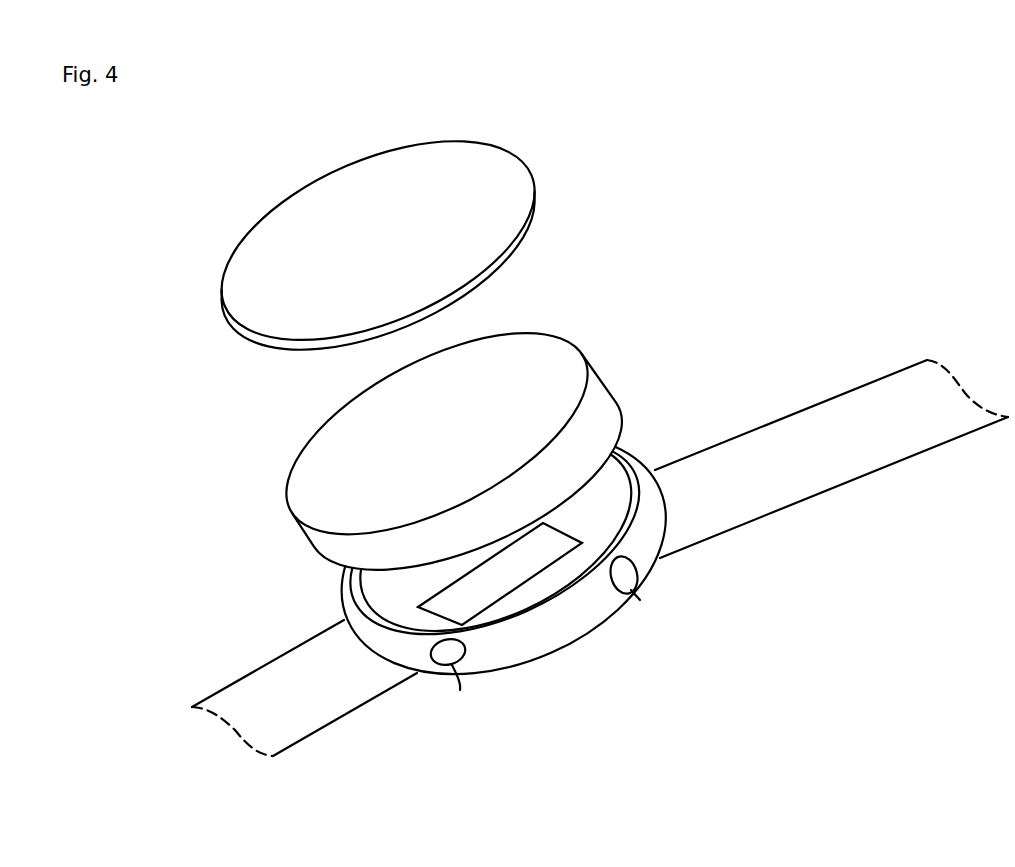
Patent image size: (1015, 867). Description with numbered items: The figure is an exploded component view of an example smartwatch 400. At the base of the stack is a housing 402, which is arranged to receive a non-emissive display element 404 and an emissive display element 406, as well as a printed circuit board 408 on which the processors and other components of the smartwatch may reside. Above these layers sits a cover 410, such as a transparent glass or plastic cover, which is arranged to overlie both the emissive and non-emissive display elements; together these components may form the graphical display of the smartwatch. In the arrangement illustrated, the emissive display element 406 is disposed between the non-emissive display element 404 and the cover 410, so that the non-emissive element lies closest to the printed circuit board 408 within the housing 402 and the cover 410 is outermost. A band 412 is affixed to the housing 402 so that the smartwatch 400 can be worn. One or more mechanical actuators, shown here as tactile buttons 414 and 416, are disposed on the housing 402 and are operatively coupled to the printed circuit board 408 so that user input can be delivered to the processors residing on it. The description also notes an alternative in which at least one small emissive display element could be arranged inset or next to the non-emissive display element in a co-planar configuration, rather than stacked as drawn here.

The smartwatch 400 is at (110, 124).
The housing 402 is at (580, 615).
The non-emissive display element 404 is at (317, 562).
The emissive display element 406 is at (287, 517).
The printed circuit board 408 is at (472, 607).
The cover 410 is at (493, 156).
The band 412 is at (810, 497).
The tactile button 414 is at (460, 690).
The tactile button 416 is at (640, 600).